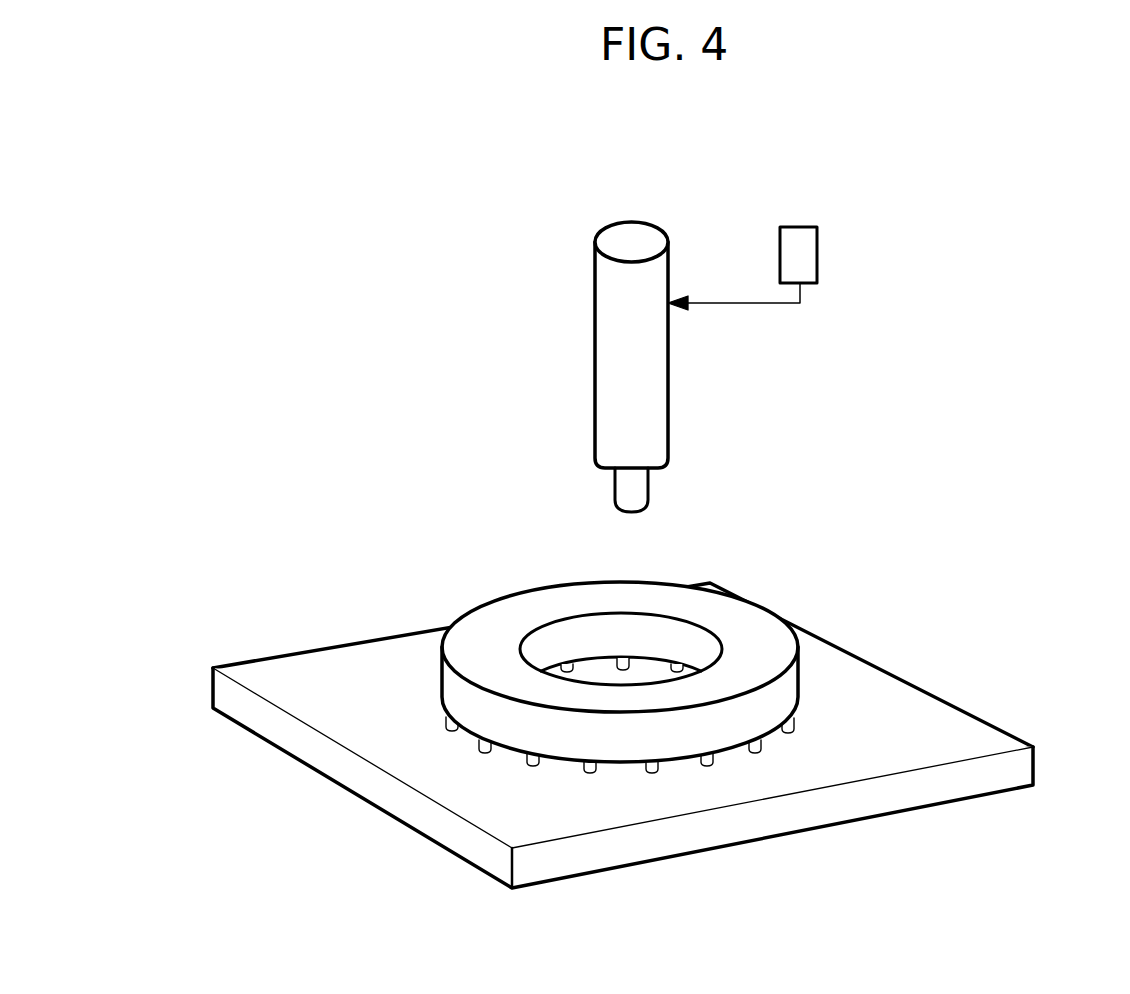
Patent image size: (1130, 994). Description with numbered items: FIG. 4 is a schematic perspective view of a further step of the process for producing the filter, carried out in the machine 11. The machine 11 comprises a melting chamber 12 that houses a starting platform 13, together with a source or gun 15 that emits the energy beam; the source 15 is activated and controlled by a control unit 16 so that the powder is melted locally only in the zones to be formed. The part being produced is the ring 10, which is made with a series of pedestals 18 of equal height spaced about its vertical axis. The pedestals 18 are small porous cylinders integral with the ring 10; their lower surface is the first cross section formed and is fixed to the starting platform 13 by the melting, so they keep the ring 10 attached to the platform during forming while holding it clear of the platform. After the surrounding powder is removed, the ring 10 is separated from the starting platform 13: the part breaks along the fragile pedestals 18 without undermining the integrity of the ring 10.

The ring 10 is at (496, 585).
The machine 11 is at (293, 250).
The melting chamber 12 is at (895, 565).
The starting platform 13 is at (917, 720).
The source 15 is at (605, 312).
The control unit 16 is at (807, 258).
The pedestals 18 is at (590, 775).